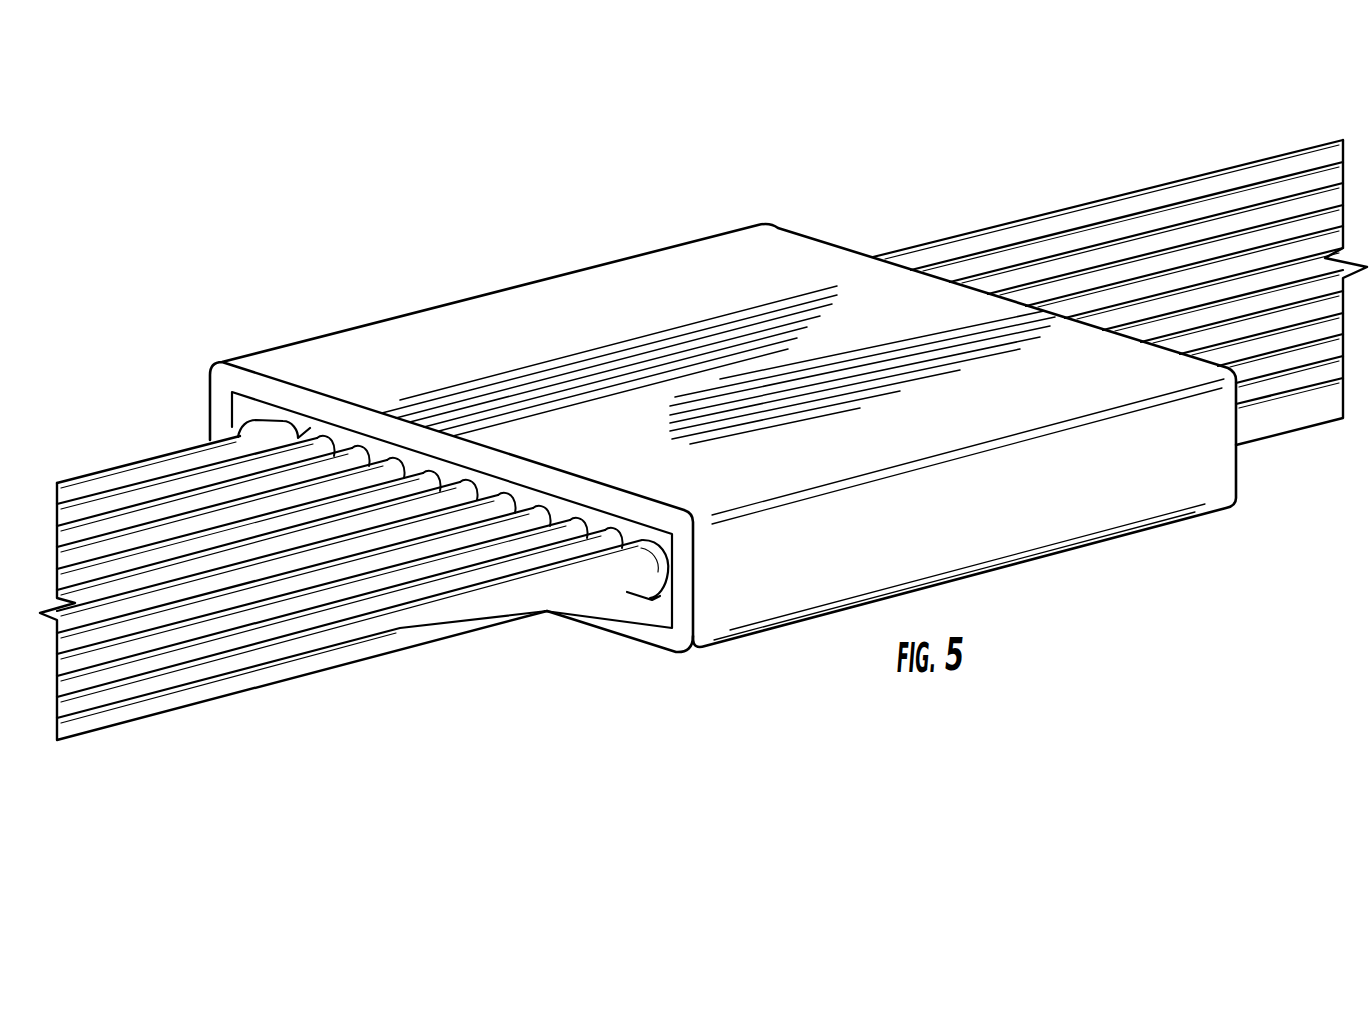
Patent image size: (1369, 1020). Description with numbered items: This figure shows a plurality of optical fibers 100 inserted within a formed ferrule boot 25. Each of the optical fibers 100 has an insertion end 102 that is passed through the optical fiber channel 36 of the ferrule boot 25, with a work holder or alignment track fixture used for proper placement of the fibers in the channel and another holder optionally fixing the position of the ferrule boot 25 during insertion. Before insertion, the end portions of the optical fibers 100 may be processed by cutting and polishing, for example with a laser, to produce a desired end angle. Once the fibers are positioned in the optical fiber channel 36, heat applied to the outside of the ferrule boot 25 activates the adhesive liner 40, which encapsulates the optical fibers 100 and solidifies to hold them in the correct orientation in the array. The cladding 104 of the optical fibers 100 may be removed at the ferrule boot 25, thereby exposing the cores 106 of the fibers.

The optical fibers 100 is at (703, 432).
The ferrule boot 25 is at (723, 430).
The insertion end 102 is at (354, 601).
The cladding 104 is at (1281, 428).
The cores 106 is at (415, 636).
The optical fiber channel 36 is at (640, 592).
The adhesive liner 40 is at (659, 612).